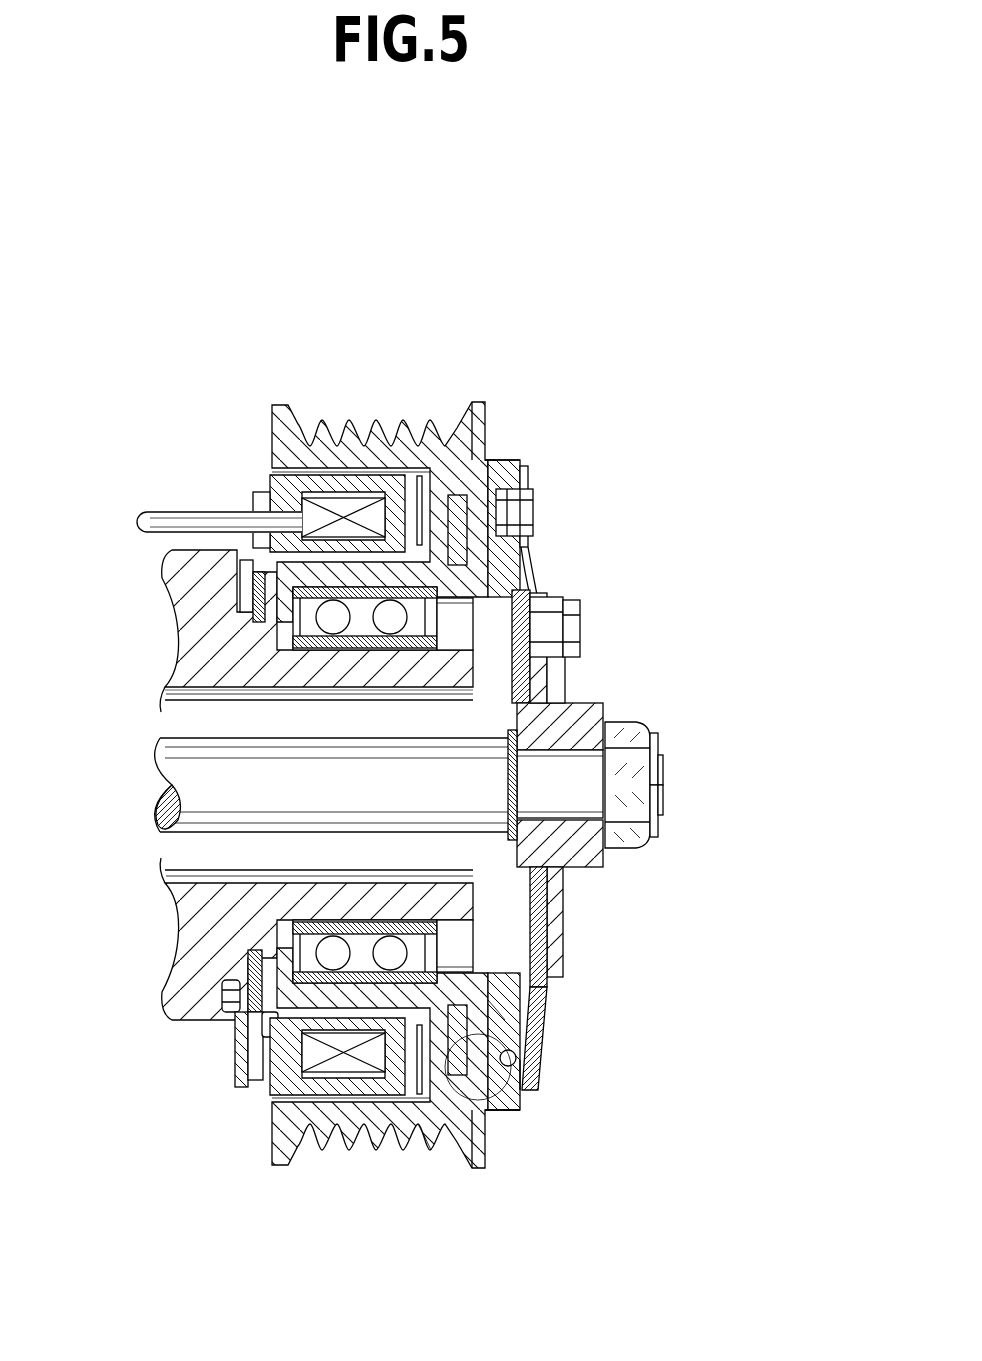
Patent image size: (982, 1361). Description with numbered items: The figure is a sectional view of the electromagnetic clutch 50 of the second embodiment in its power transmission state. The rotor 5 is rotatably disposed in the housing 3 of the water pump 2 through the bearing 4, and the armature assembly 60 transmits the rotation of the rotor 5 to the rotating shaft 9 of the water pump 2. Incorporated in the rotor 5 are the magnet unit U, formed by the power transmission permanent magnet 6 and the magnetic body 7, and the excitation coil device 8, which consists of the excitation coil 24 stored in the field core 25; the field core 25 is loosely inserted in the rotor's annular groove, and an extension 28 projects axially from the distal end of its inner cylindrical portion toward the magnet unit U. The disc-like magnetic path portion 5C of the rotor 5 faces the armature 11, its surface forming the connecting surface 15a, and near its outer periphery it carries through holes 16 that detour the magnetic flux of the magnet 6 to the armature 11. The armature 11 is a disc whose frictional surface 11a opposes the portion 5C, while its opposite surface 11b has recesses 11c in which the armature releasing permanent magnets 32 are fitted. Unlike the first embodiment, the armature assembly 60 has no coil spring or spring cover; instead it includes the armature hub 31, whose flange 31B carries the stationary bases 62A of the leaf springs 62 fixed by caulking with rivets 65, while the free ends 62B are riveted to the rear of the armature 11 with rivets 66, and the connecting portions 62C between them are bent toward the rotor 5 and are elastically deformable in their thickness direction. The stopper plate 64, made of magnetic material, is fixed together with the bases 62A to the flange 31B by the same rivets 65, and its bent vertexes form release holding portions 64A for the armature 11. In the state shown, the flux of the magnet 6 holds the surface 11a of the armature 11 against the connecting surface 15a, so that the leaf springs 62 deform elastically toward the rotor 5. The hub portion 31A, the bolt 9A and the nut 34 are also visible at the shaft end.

The water pump 2 is at (100, 716).
The housing 3 is at (168, 571).
The bearing 4 is at (310, 642).
The rotor 5 is at (371, 747).
The disc-like magnetic path portion 5C is at (492, 1140).
The power transmission permanent magnet 6 is at (441, 456).
The magnetic body 7 is at (446, 466).
The excitation coil device 8 is at (279, 891).
The rotating shaft 9 is at (155, 770).
The bolt 9A is at (573, 800).
The armature 11 is at (545, 754).
The frictional surface 11a is at (494, 458).
The surface 11b is at (515, 1103).
The recesses 11c is at (540, 1073).
The connecting surface 15a is at (497, 1007).
The through holes 16 is at (473, 400).
The excitation coil 24 is at (282, 1080).
The field core 25 is at (337, 785).
The extension 28 is at (427, 1130).
The armature hub 31 is at (639, 777).
The hub boss 31A is at (588, 717).
The flange 31B is at (560, 677).
The armature releasing permanent magnets 32 is at (520, 1057).
The nut 34 is at (652, 728).
The electromagnetic clutch 50 is at (545, 754).
The armature assembly 60 is at (530, 579).
The leaf springs 62 is at (494, 579).
The stationary base 62A is at (517, 663).
The free end 62B is at (520, 470).
The connecting portion 62C is at (529, 557).
The stopper plate 64 is at (582, 978).
The release holding portions 64A is at (540, 1033).
The rivets 65 is at (583, 623).
The rivets 66 is at (530, 510).
The magnet unit U is at (442, 322).